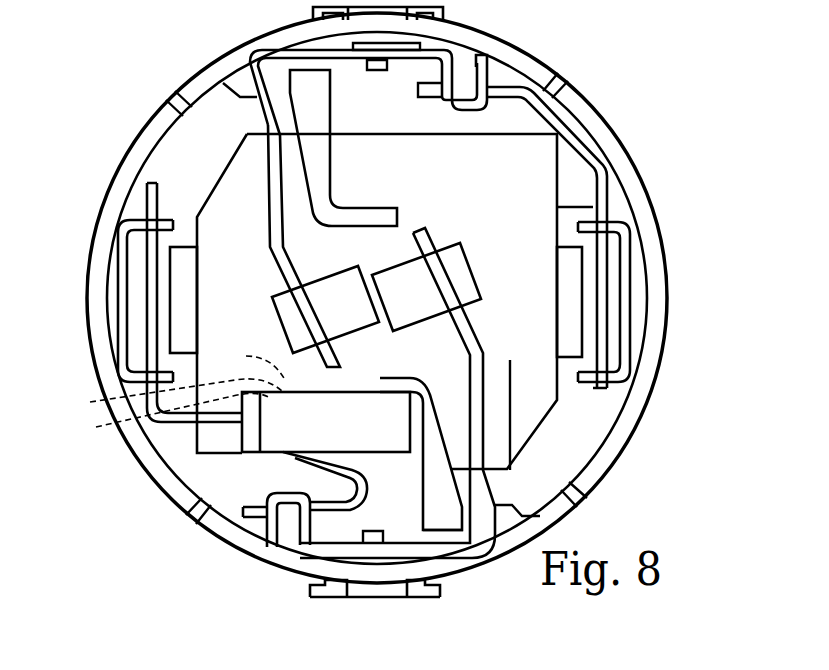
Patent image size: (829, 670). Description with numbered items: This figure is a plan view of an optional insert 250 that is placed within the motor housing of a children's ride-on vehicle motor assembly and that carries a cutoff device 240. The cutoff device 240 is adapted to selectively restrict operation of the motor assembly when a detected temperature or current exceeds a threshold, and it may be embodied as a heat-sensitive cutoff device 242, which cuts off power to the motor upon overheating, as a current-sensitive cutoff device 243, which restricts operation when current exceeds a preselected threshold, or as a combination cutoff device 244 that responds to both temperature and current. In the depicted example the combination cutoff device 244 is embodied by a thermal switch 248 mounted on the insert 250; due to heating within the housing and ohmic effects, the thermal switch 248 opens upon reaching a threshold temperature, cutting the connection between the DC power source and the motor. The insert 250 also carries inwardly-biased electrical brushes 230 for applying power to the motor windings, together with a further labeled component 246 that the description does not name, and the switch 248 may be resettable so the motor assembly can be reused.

The inwardly-biased electrical brushes 230 is at (383, 332).
The cutoff device 240 is at (286, 381).
The heat-sensitive cutoff device 242 is at (159, 420).
The current-sensitive cutoff device 243 is at (162, 399).
The combination cutoff device 244 is at (242, 360).
The power source block 246 is at (291, 455).
The thermal switch 248 is at (374, 452).
The insert 250 is at (651, 190).